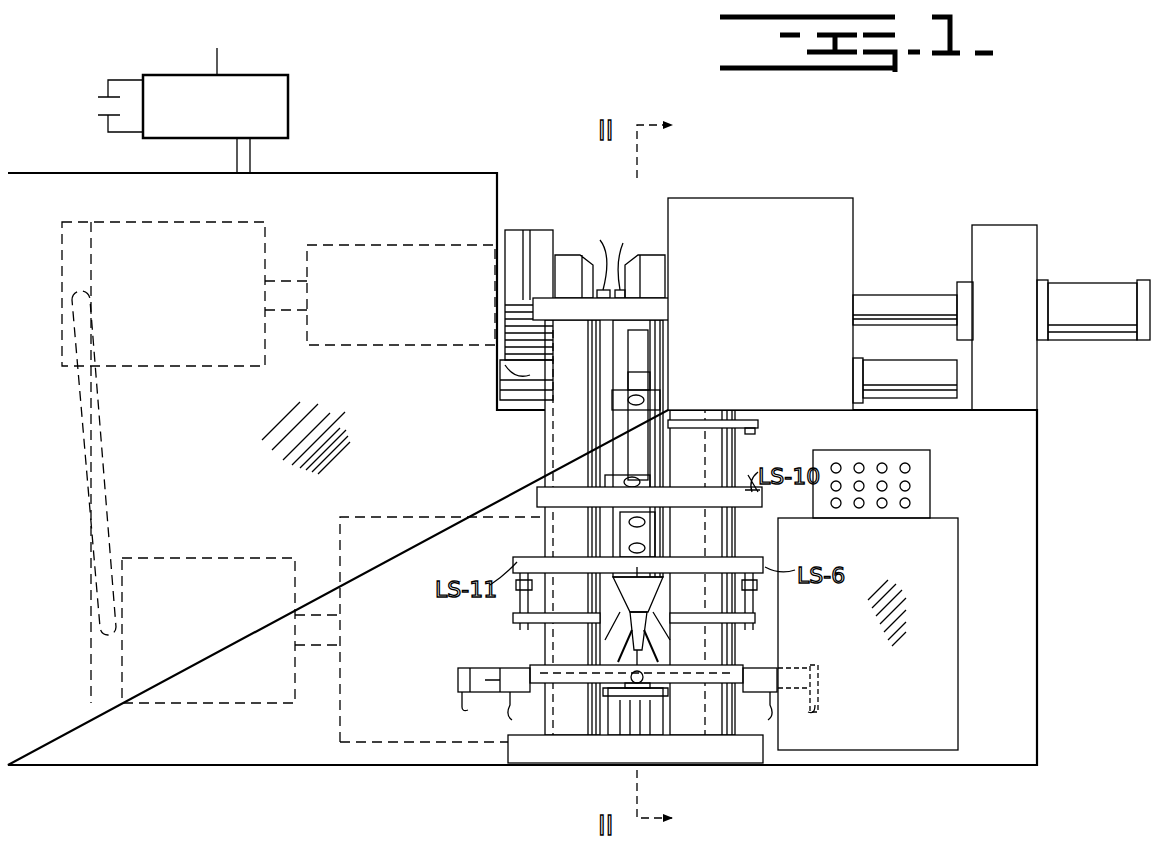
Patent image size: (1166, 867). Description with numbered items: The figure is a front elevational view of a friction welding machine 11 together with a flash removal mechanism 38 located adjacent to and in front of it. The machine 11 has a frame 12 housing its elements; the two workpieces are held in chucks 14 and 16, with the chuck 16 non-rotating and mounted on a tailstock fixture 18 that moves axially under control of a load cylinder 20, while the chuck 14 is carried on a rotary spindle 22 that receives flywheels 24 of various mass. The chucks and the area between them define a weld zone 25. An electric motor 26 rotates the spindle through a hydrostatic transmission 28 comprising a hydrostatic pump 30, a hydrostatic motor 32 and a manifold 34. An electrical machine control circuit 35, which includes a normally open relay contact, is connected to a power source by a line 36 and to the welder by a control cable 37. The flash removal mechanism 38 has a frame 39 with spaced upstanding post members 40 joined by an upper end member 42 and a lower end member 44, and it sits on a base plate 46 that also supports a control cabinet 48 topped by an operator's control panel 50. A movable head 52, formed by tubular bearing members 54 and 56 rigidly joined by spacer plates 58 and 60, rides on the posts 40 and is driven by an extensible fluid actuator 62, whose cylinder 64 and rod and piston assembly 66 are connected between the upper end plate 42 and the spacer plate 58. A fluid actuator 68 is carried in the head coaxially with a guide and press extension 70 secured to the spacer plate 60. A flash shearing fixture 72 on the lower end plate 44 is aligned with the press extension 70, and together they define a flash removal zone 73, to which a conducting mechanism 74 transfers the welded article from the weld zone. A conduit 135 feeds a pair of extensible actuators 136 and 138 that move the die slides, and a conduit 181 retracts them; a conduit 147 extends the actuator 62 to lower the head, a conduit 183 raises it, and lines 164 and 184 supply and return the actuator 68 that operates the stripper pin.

The friction welding machine 11 is at (410, 158).
The frame 12 is at (205, 522).
The chuck 14 is at (575, 283).
The chuck 16 is at (662, 270).
The tailstock fixture 18 is at (782, 205).
The load cylinder 20 is at (1105, 292).
The spindle 22 is at (502, 270).
The flywheels 24 is at (505, 372).
The weld zone 25 is at (612, 226).
The electric motor 26 is at (378, 525).
The hydrostatic transmission 28 is at (85, 512).
The hydrostatic pump 30 is at (277, 558).
The hydrostatic motor 32 is at (205, 358).
The manifold 34 is at (95, 460).
The electrical machine control circuit 35 is at (280, 104).
The line 36 is at (217, 55).
The control cable 37 is at (250, 157).
The flash removal mechanism 38 is at (518, 455).
The frame 39 is at (745, 370).
The post members 40 is at (708, 395).
The upper end member 42 is at (727, 308).
The lower end member 44 is at (715, 742).
The base plate 46 is at (640, 758).
The control cabinet 48 is at (945, 600).
The operator's control panel 50 is at (928, 487).
The movable head 52 is at (490, 525).
The tubular bearing member 54 is at (540, 537).
The tubular bearing member 56 is at (710, 545).
The spacer plate 58 is at (540, 497).
The spacer plate 60 is at (656, 585).
The extensible fluid actuator 62 is at (608, 440).
The cylinder 64 is at (650, 455).
The rod and piston assembly 66 is at (652, 350).
The fluid actuator 68 is at (612, 532).
The guide and press extension 70 is at (620, 613).
The flash shearing fixture 72 is at (668, 712).
The flash removal zone 73 is at (657, 656).
The conducting mechanism 74 is at (612, 650).
The conduit 135 is at (462, 710).
The extensible actuator 136 is at (500, 665).
The extensible actuator 138 is at (787, 668).
The conduit 147 is at (633, 478).
The line 164 is at (640, 520).
The conduit 181 is at (512, 710).
The conduit 183 is at (600, 388).
The line 184 is at (648, 548).